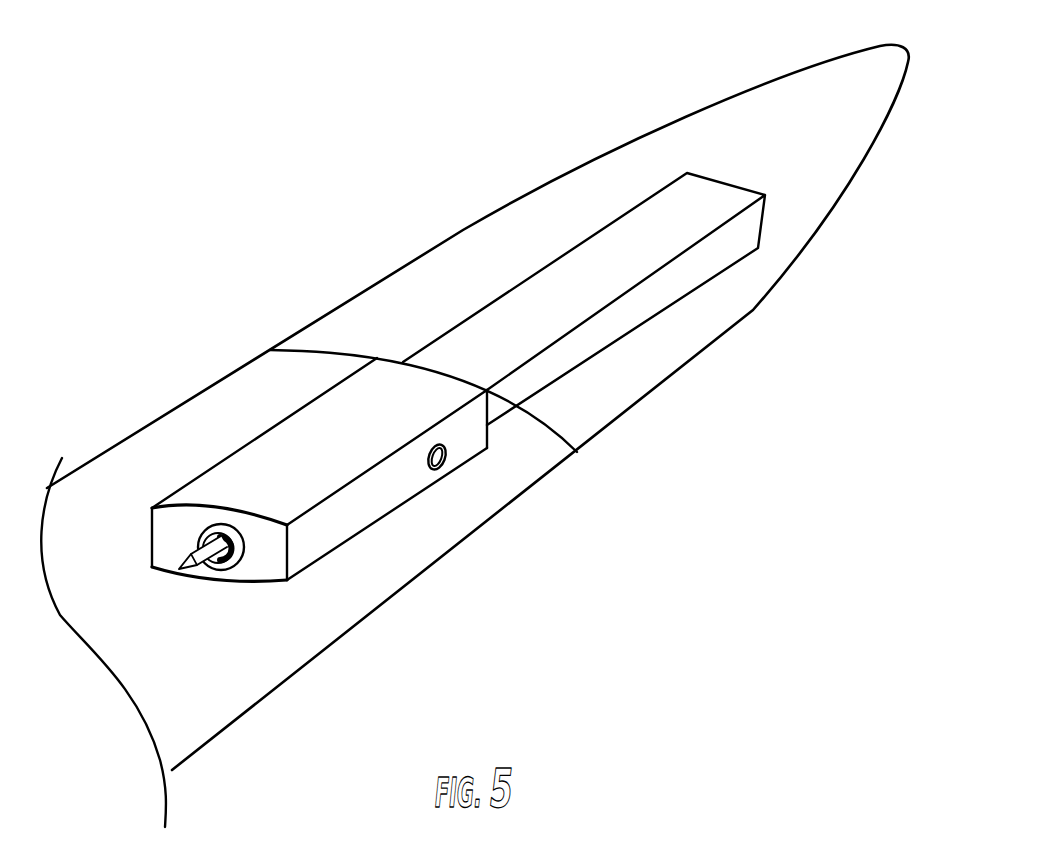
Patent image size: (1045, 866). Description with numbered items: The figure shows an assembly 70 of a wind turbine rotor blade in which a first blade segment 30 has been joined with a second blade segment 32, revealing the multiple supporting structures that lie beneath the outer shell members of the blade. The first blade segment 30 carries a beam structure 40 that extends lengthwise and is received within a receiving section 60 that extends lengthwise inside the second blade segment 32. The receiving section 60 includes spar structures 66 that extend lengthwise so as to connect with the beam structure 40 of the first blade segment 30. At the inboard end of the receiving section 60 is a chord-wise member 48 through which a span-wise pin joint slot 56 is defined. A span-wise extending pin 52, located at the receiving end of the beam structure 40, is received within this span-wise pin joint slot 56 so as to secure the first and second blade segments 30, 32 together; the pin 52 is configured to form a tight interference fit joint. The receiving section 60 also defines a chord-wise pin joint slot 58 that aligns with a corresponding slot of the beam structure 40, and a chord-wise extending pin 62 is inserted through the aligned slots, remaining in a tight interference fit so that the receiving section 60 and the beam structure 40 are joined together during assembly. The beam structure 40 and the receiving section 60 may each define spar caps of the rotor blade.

The first blade segment 30 is at (673, 118).
The second blade segment 32 is at (103, 472).
The beam structure 40 is at (508, 276).
The chord-wise member 48 is at (182, 528).
The span-wise extending pin 52 is at (192, 577).
The span-wise pin joint slot 56 is at (222, 526).
The chord-wise pin joint slot 58 is at (430, 467).
The receiving section 60 is at (357, 522).
The chord-wise extending pin 62 is at (445, 461).
The spar structures 66 is at (290, 414).
The assembly 70 is at (181, 194).